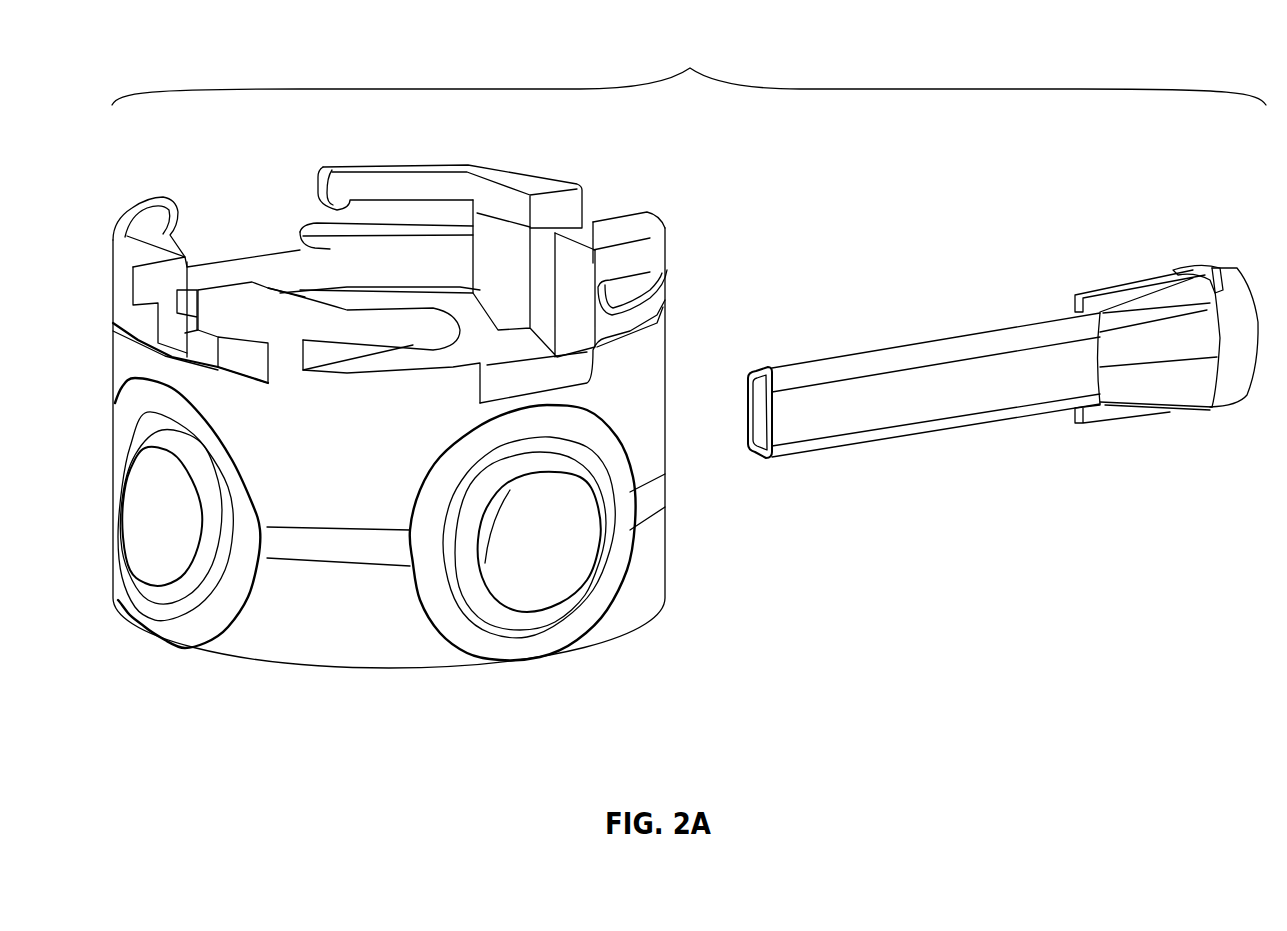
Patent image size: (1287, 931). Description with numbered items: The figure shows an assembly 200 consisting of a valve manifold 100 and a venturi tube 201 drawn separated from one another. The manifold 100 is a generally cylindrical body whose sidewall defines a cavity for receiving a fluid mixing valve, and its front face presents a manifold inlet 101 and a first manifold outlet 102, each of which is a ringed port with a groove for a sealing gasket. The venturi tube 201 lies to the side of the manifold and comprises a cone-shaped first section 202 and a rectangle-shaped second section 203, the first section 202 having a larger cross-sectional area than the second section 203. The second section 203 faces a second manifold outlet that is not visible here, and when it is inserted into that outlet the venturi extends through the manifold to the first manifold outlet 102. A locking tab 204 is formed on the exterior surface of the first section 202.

The assembly 200 is at (689, 69).
The valve manifold 100 is at (130, 172).
The manifold inlet 101 is at (537, 565).
The first manifold outlet 102 is at (163, 540).
The venturi tube 201 is at (1003, 331).
The cone-shaped first section 202 is at (1147, 415).
The rectangle-shaped second section 203 is at (970, 427).
The locking tab 204 is at (1175, 268).